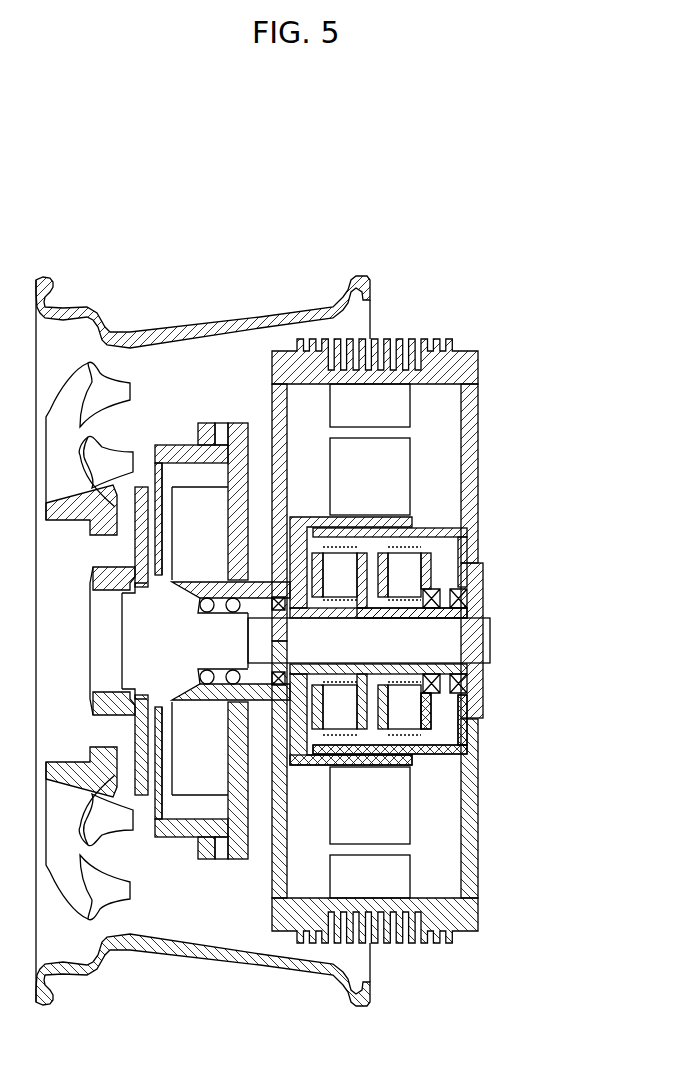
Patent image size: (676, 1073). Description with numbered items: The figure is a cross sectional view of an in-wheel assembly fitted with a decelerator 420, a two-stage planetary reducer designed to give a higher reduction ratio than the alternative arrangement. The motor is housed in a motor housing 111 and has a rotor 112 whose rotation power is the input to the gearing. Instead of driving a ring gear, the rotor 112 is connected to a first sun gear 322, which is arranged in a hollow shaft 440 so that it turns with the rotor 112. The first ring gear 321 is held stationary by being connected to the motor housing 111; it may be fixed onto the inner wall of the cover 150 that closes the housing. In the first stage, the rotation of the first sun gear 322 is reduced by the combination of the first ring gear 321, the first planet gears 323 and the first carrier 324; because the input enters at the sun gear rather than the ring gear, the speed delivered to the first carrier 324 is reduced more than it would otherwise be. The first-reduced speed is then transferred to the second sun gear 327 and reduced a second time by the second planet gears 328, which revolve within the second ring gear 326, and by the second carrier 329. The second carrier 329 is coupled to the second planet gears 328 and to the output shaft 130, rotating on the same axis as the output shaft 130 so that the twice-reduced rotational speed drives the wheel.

The motor housing 111 is at (466, 378).
The rotor 112 is at (400, 447).
The output shaft 130 is at (460, 652).
The cover 150 is at (484, 586).
The first ring gear 321 is at (405, 531).
The first sun gear 322 is at (360, 634).
The first planet gears 323 is at (345, 560).
The first carrier 324 is at (407, 622).
The second ring gear 326 is at (420, 762).
The second sun gear 327 is at (440, 690).
The second planet gears 328 is at (470, 712).
The second carrier 329 is at (415, 745).
The decelerator 420 is at (410, 772).
The hollow shaft 440 is at (345, 516).